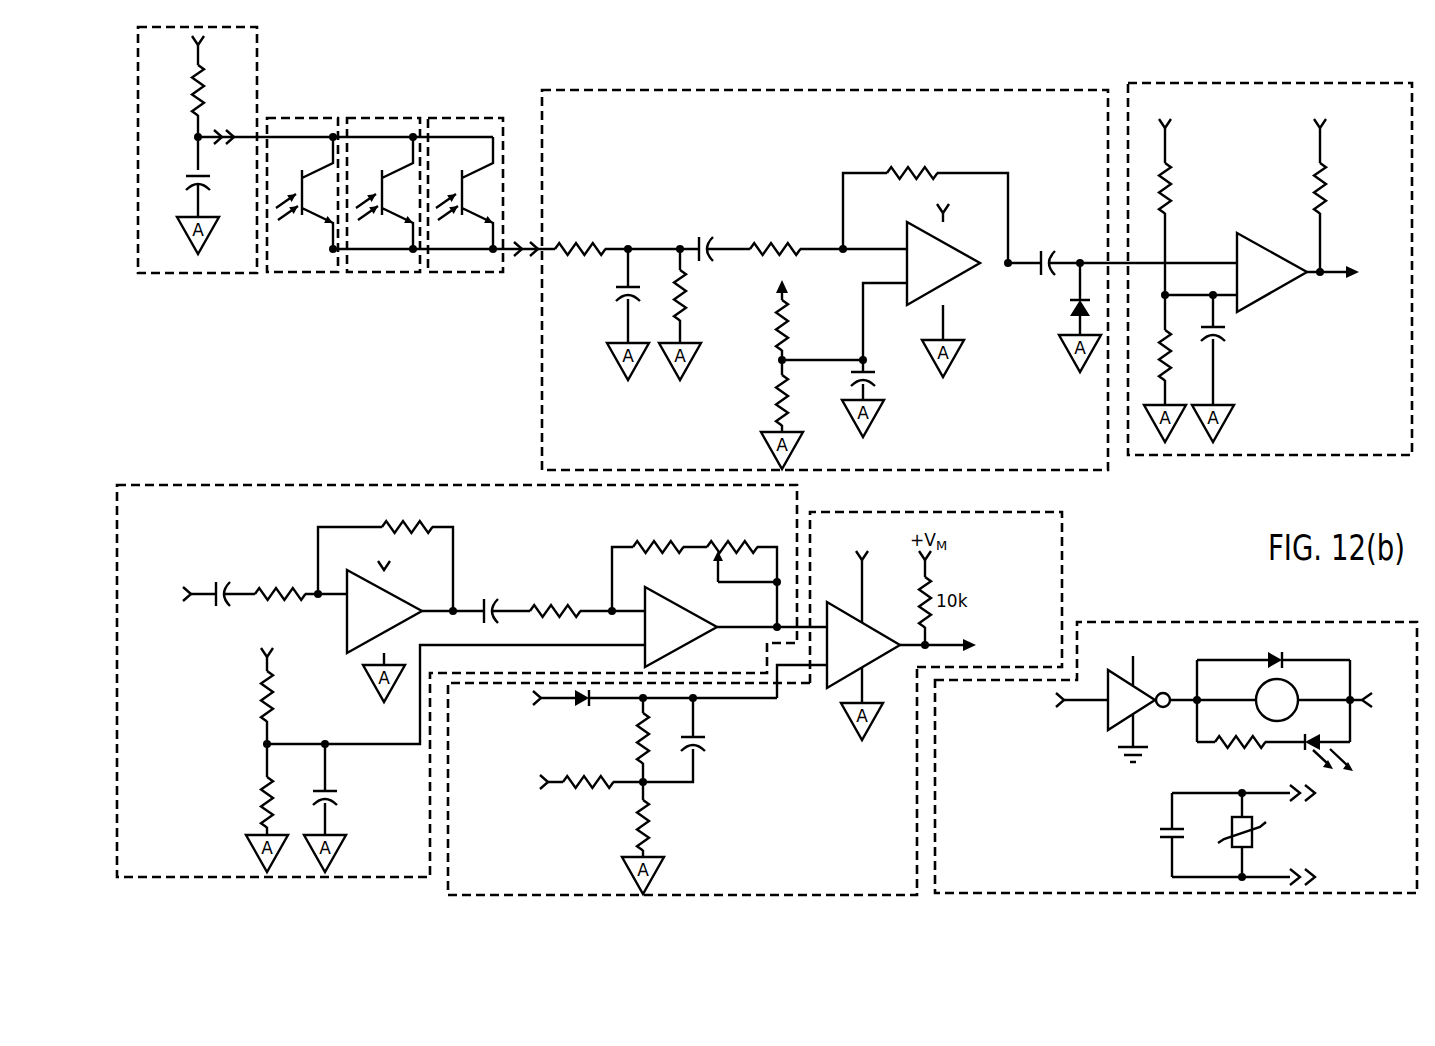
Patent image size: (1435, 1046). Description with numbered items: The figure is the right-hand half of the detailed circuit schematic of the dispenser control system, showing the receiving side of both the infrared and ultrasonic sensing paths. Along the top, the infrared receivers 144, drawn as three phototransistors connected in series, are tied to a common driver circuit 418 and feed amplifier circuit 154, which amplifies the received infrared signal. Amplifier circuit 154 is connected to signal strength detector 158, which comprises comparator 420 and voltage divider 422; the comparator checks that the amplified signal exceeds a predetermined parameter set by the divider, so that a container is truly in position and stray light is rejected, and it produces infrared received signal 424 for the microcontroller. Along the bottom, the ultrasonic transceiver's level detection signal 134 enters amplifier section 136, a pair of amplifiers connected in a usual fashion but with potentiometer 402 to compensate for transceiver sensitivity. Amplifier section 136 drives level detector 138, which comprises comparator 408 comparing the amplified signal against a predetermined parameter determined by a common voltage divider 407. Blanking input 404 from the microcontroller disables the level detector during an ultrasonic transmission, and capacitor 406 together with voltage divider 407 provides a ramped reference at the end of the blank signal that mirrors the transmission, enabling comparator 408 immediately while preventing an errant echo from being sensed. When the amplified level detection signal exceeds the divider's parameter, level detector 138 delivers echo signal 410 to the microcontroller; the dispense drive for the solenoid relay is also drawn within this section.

The common driver circuit 418 is at (258, 61).
The receiver 144 is at (448, 117).
The amplifier circuit 154 is at (697, 90).
The signal strength detector 158 is at (1200, 83).
The voltage divider 422 is at (1185, 167).
The infrared received signal 424 is at (1333, 268).
The comparator 420 is at (1268, 302).
The amplifier section 136 is at (250, 487).
The level detection signal 134 is at (200, 588).
The potentiometer 402 is at (709, 564).
The blanking input 404 is at (528, 718).
The capacitor 406 is at (716, 770).
The voltage divider 407 is at (537, 833).
The comparator 408 is at (818, 688).
The echo signal 410 is at (1000, 624).
The level detector 138 is at (1064, 580).